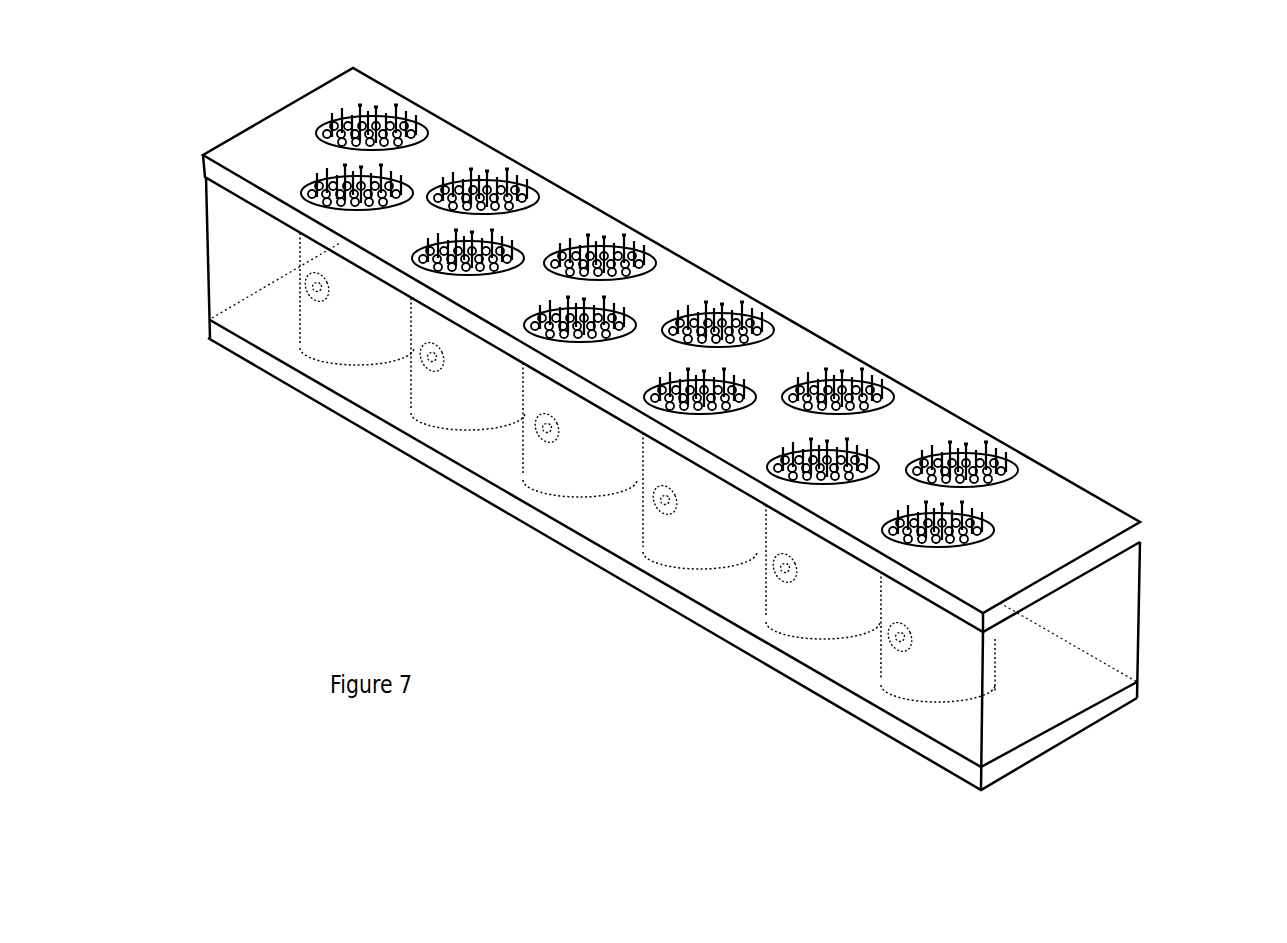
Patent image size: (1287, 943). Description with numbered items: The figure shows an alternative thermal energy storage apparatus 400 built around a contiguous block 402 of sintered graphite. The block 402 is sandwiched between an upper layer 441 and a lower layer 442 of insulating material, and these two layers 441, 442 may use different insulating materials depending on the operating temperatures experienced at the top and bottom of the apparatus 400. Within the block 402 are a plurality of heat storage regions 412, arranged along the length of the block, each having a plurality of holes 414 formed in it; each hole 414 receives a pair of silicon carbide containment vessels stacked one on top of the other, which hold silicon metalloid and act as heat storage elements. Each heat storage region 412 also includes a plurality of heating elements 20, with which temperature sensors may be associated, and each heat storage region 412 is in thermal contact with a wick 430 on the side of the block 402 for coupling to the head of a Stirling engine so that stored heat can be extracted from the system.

The thermal energy storage apparatus 400 is at (701, 406).
The contiguous block 402 is at (1067, 677).
The heat storage region 412 is at (410, 117).
The hole 414 is at (348, 112).
The heating element 20 is at (398, 112).
The wick 430 is at (306, 276).
The upper layer 441 is at (208, 170).
The lower layer 442 is at (219, 341).